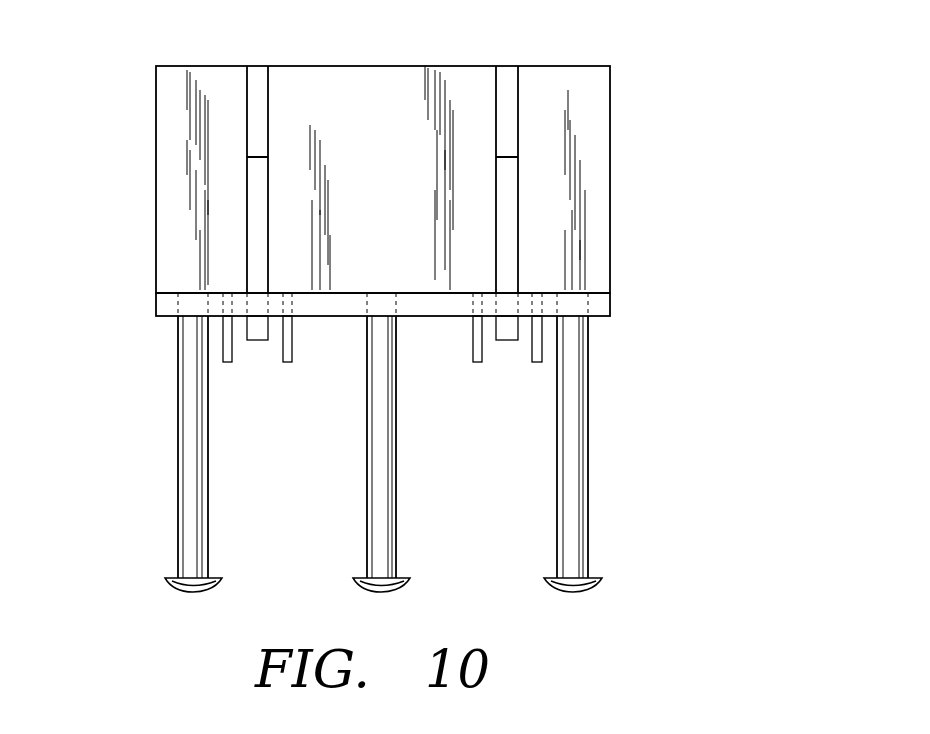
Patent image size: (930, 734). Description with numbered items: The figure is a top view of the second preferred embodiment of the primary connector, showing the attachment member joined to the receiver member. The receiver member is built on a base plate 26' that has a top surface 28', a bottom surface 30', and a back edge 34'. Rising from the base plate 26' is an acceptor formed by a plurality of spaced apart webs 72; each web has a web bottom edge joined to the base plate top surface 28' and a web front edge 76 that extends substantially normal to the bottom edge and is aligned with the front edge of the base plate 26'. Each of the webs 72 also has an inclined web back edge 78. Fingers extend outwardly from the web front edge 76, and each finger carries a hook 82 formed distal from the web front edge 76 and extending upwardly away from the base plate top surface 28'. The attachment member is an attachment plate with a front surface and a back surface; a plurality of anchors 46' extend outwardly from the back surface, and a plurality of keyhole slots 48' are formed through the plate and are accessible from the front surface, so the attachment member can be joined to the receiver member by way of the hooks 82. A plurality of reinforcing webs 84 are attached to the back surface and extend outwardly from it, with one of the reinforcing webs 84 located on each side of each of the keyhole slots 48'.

The base plate 26' is at (669, 190).
The top surface 28' is at (112, 169).
The bottom surface 30' is at (437, 285).
The back edge 34' is at (436, 156).
The anchors 46' is at (385, 454).
The keyhole slots 48' is at (403, 186).
The spaced apart webs 72 is at (258, 190).
The web front edge 76 is at (257, 290).
The inclined web back edge 78 is at (258, 90).
The hook 82 is at (258, 332).
The reinforcing webs 84 is at (228, 338).